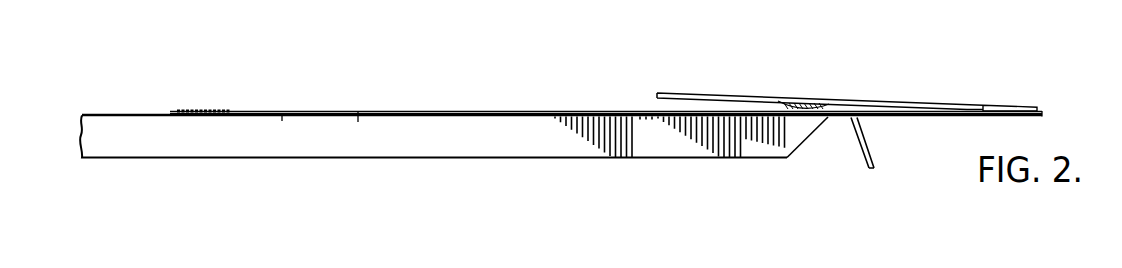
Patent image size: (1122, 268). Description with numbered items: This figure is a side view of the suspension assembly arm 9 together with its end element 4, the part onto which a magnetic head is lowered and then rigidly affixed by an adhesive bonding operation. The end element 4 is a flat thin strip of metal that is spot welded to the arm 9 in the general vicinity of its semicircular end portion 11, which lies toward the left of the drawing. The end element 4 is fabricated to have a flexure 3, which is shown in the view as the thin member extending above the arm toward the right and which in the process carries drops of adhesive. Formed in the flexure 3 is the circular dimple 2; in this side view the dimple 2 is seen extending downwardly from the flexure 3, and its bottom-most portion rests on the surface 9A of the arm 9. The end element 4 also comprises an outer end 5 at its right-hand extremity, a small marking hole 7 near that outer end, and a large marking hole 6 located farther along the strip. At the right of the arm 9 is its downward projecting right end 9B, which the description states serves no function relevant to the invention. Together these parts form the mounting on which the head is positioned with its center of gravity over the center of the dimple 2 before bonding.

The dimple 2 is at (812, 103).
The flexure 3 is at (717, 93).
The end element 4 is at (540, 111).
The outer end 5 is at (1040, 112).
The large marking hole 6 is at (355, 112).
The small marking hole 7 is at (1002, 108).
The suspension assembly arm 9 is at (262, 144).
The surface 9A is at (803, 118).
The downward projecting right end 9B is at (868, 140).
The semicircular end portion 11 is at (206, 111).